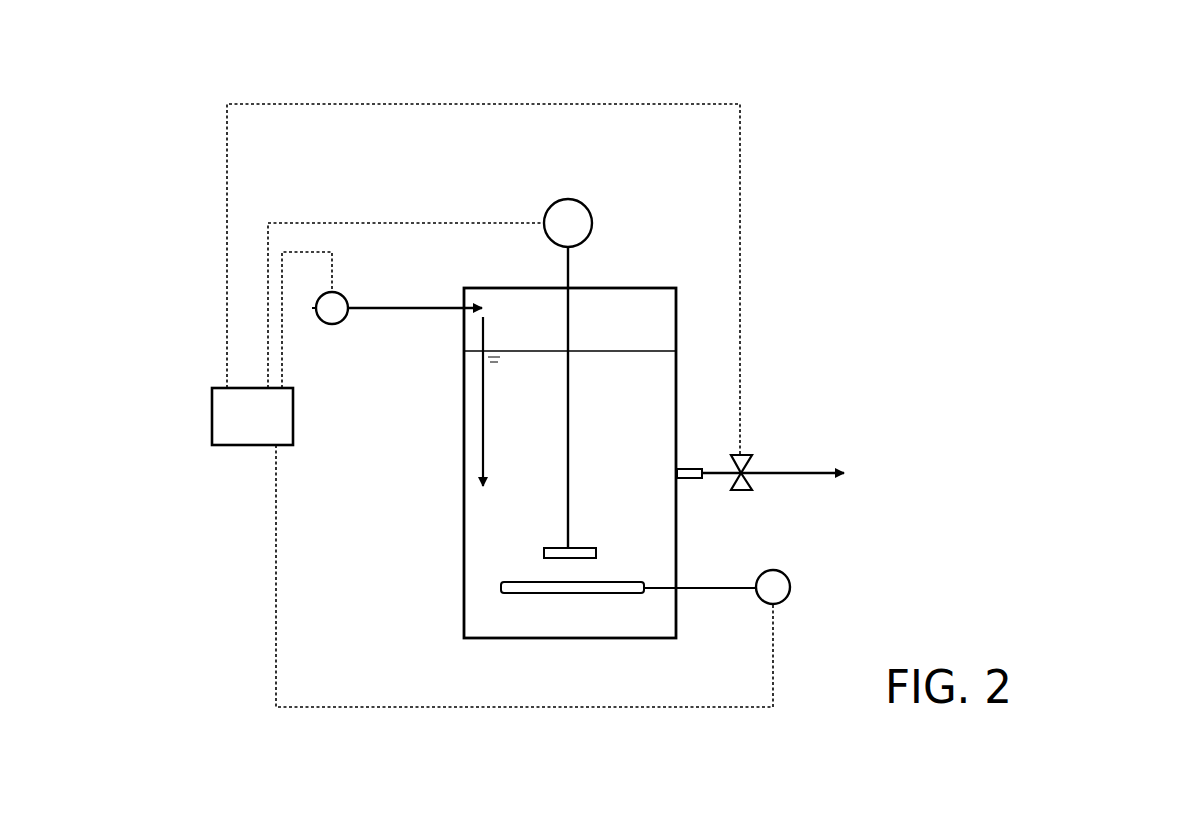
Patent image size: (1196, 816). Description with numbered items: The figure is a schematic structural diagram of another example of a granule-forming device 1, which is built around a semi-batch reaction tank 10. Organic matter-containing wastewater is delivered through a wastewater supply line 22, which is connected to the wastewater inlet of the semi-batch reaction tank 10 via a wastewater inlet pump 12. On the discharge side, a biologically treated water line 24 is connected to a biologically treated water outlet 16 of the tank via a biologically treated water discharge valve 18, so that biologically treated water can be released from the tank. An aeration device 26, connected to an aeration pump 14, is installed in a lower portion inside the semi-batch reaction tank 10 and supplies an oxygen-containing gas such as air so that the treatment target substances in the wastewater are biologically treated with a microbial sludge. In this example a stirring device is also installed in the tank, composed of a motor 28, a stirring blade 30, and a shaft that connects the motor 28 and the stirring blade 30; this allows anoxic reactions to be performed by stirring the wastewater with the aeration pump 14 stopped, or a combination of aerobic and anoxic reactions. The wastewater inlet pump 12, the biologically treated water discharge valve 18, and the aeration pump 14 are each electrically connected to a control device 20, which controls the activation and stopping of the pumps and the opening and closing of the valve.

The granule-forming device 1 is at (612, 72).
The semi-batch reaction tank 10 is at (464, 458).
The wastewater inlet pump 12 is at (330, 325).
The aeration pump 14 is at (786, 602).
The biologically treated water outlet 16 is at (689, 466).
The biologically treated water discharge valve 18 is at (745, 490).
The control device 20 is at (212, 415).
The wastewater supply line 22 is at (434, 300).
The biologically treated water line 24 is at (792, 470).
The aeration device 26 is at (530, 580).
The motor 28 is at (578, 200).
The stirring blade 30 is at (588, 548).